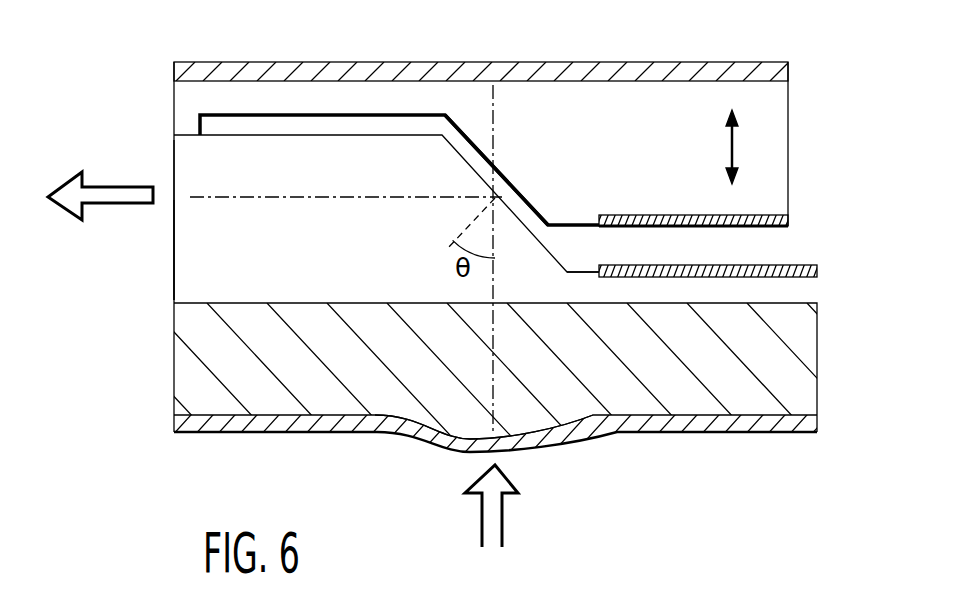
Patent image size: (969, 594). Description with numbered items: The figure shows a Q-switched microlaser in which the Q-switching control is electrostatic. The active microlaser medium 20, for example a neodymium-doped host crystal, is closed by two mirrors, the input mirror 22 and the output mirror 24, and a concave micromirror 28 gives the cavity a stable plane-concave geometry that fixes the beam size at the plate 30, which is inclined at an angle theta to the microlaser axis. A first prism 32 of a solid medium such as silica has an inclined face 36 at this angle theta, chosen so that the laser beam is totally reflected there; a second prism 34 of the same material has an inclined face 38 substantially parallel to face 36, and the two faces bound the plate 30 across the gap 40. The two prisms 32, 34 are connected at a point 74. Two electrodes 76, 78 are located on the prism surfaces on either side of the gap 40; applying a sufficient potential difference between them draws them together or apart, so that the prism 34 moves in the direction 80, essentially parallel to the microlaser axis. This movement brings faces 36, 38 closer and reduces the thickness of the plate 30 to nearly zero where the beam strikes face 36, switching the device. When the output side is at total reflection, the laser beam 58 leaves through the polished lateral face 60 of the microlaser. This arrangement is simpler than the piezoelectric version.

The active microlaser medium 20 is at (790, 390).
The input mirror 22 is at (175, 421).
The output mirror 24 is at (375, 70).
The micromirror 28 is at (560, 443).
The plate 30 is at (457, 148).
The component (first prism) 32 is at (190, 280).
The second element (second prism) 34 is at (665, 103).
The inclined face 36 is at (520, 230).
The inclined face 38 is at (500, 172).
The gap 40 is at (597, 242).
The laser beam 58 is at (108, 183).
The lateral face 60 is at (175, 243).
The connection point 74 is at (188, 123).
The electrode 76 is at (788, 220).
The electrode 78 is at (785, 272).
The direction of movement 80 is at (734, 146).